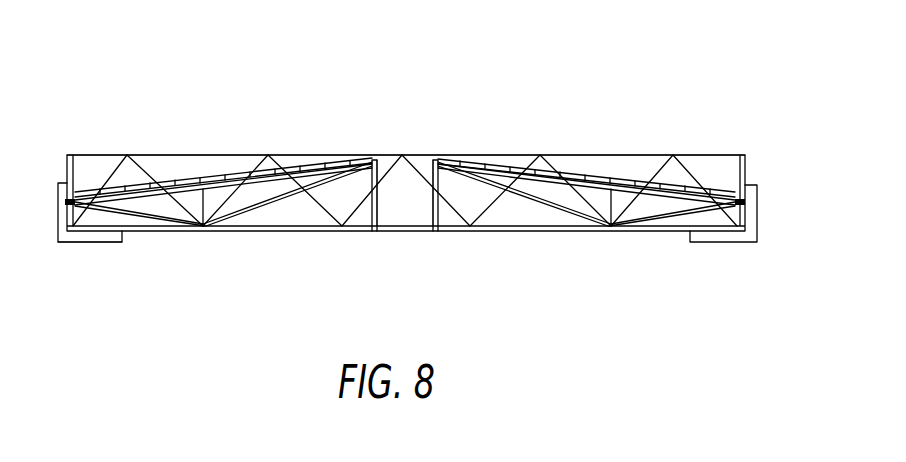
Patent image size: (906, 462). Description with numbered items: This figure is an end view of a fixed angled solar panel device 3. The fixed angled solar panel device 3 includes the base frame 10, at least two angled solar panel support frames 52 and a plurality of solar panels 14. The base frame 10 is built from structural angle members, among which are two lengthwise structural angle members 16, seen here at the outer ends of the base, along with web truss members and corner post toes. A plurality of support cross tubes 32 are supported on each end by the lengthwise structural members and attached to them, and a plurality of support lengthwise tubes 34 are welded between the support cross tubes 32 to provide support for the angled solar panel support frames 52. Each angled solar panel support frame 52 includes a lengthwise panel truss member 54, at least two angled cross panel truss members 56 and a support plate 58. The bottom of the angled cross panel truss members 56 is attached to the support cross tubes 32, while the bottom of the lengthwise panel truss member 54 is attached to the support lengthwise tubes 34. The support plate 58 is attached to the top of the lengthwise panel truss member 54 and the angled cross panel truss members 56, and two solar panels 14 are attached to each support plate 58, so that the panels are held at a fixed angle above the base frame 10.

The fixed angled solar panel device 3 is at (671, 119).
The base frame 10 is at (92, 292).
The solar panel 14 is at (295, 165).
The lengthwise structural angle member 16 is at (62, 212).
The support cross tube 32 is at (558, 232).
The support lengthwise tube 34 is at (373, 232).
The angled solar panel support frame 52 is at (181, 161).
The lengthwise panel truss member 54 is at (378, 200).
The angled cross panel truss member 56 is at (252, 208).
The support plate 58 is at (360, 165).